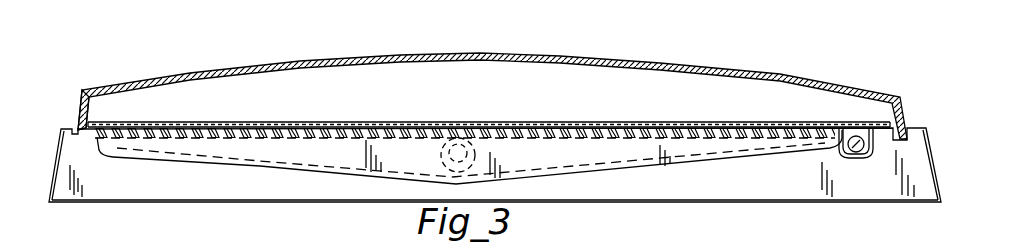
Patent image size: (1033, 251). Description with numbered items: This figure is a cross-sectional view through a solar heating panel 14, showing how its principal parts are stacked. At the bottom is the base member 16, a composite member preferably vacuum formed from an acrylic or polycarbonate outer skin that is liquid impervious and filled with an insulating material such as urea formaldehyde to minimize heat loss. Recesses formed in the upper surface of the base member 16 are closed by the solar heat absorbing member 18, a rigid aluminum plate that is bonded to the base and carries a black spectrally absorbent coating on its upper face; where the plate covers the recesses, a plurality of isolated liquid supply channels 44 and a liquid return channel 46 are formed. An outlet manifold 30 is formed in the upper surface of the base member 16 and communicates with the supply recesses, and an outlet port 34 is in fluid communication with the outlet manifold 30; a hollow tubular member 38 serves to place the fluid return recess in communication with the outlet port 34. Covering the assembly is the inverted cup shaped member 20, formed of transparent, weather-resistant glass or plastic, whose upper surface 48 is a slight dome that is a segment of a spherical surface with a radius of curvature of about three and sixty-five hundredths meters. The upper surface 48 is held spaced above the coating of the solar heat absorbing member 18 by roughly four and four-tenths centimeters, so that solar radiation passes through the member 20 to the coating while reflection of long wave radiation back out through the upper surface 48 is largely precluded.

The solar heating panel 14 is at (773, 70).
The base member 16 is at (52, 152).
The solar heat absorbing member 18 is at (828, 121).
The inverted cup shaped member 20 is at (80, 89).
The outlet manifold 30 is at (618, 160).
The outlet port 34 is at (470, 98).
The hollow tubular member 38 is at (299, 244).
The liquid supply channels 44 is at (260, 128).
The liquid return channel 46 is at (846, 158).
The upper surface 48 is at (548, 55).